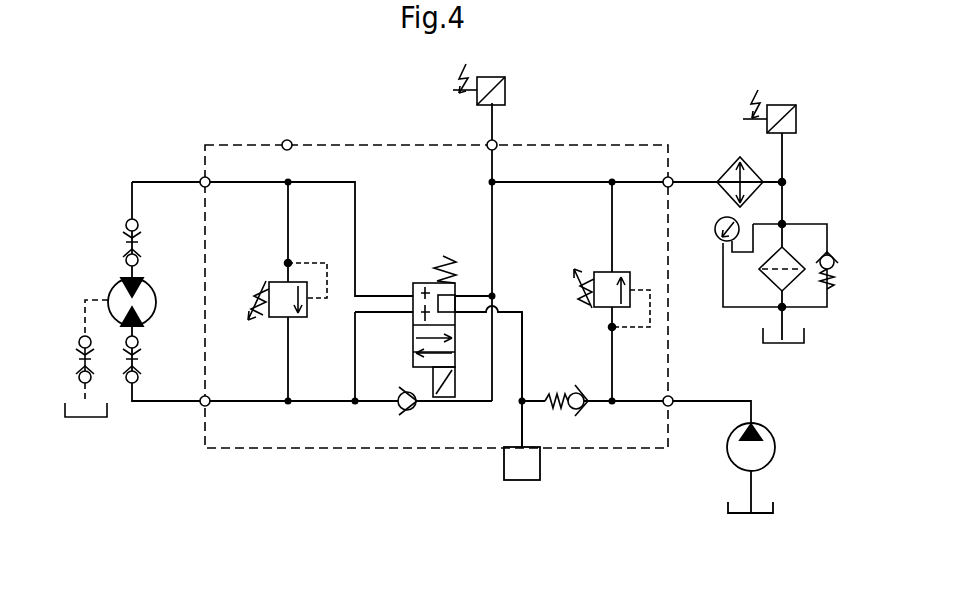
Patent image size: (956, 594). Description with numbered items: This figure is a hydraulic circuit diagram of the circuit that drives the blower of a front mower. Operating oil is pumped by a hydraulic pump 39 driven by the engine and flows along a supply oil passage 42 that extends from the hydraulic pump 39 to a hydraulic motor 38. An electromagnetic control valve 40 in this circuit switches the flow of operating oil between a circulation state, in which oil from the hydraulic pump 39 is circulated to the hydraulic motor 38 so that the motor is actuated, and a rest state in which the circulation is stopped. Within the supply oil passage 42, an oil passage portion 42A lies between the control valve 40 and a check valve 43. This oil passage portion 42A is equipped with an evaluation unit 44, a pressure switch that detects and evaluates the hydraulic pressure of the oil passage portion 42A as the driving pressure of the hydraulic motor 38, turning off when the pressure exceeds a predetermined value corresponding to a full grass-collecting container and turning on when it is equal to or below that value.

The hydraulic motor 38 is at (110, 283).
The hydraulic pump 39 is at (775, 447).
The electromagnetic control valve 40 is at (425, 283).
The supply oil passage 42 is at (645, 409).
The oil passage portion 42A is at (522, 367).
The check valve 43 is at (583, 411).
The evaluation unit 44 is at (520, 480).